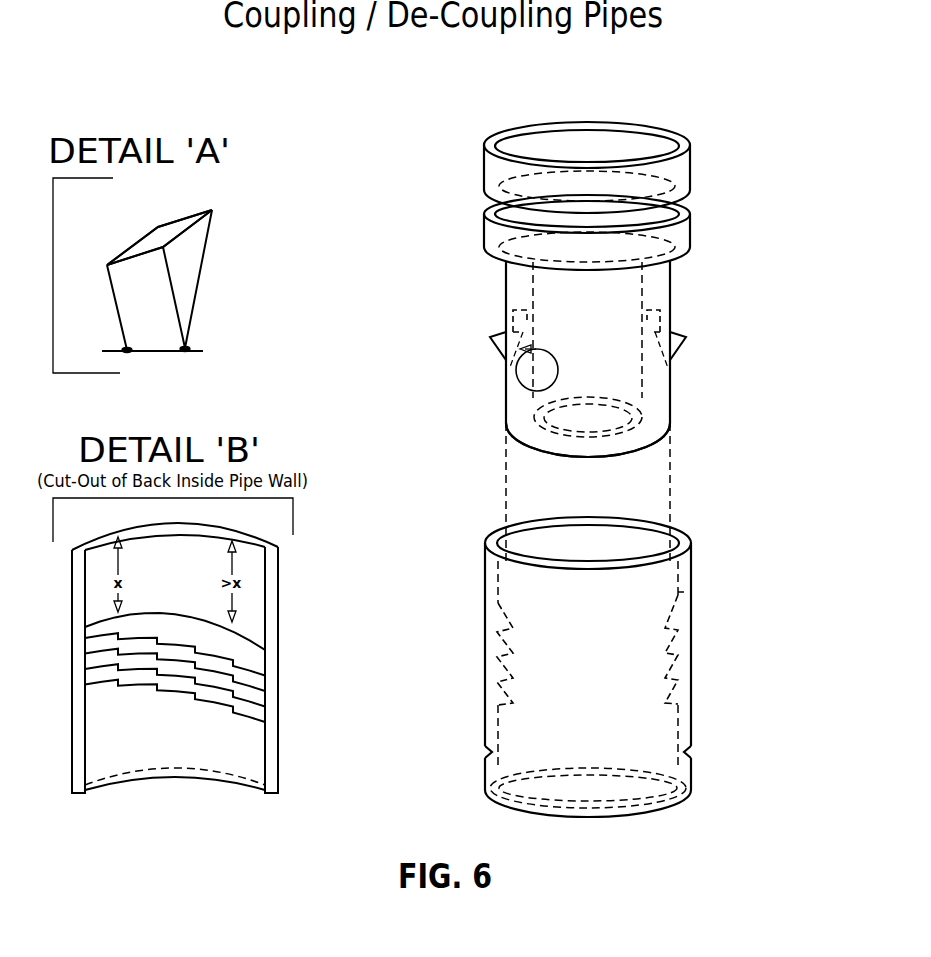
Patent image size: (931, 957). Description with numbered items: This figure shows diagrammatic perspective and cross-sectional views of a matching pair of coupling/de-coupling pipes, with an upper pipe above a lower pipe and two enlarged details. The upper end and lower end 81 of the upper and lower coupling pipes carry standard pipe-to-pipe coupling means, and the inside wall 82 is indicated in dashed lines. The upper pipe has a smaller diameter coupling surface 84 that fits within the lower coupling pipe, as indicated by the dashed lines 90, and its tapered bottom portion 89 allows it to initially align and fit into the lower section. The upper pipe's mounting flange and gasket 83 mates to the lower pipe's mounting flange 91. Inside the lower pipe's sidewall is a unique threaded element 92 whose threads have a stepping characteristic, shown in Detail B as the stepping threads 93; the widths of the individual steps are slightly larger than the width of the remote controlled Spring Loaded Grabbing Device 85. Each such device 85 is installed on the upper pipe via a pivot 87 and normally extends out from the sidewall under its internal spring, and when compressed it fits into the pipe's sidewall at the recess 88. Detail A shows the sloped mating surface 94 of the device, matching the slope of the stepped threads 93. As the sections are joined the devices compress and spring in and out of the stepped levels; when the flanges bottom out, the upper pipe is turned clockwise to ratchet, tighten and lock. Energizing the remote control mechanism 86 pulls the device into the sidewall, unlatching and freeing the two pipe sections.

The upper end and lower end of the coupling pipes 81 is at (648, 122).
The inside wall 82 is at (497, 177).
The upper pipe mounting flange and gasket 83 is at (490, 264).
The upper pipe coupling surface 84 is at (666, 280).
The Spring Loaded Grabbing Device (SLGD) 85 is at (676, 329).
The SLGD remote control mechanism 86 is at (509, 317).
The pivot 87 is at (499, 358).
The sidewall recess for SLGD 88 is at (532, 392).
The tapered bottom portion 89 is at (665, 421).
The dashed lines indicating fit within lower pipe 90 is at (684, 480).
The lower pipe mounting flange 91 is at (675, 532).
The threaded element 92 is at (497, 622).
The stepping threads 93 is at (237, 741).
The sloped mating surface of SLGD 94 is at (122, 240).